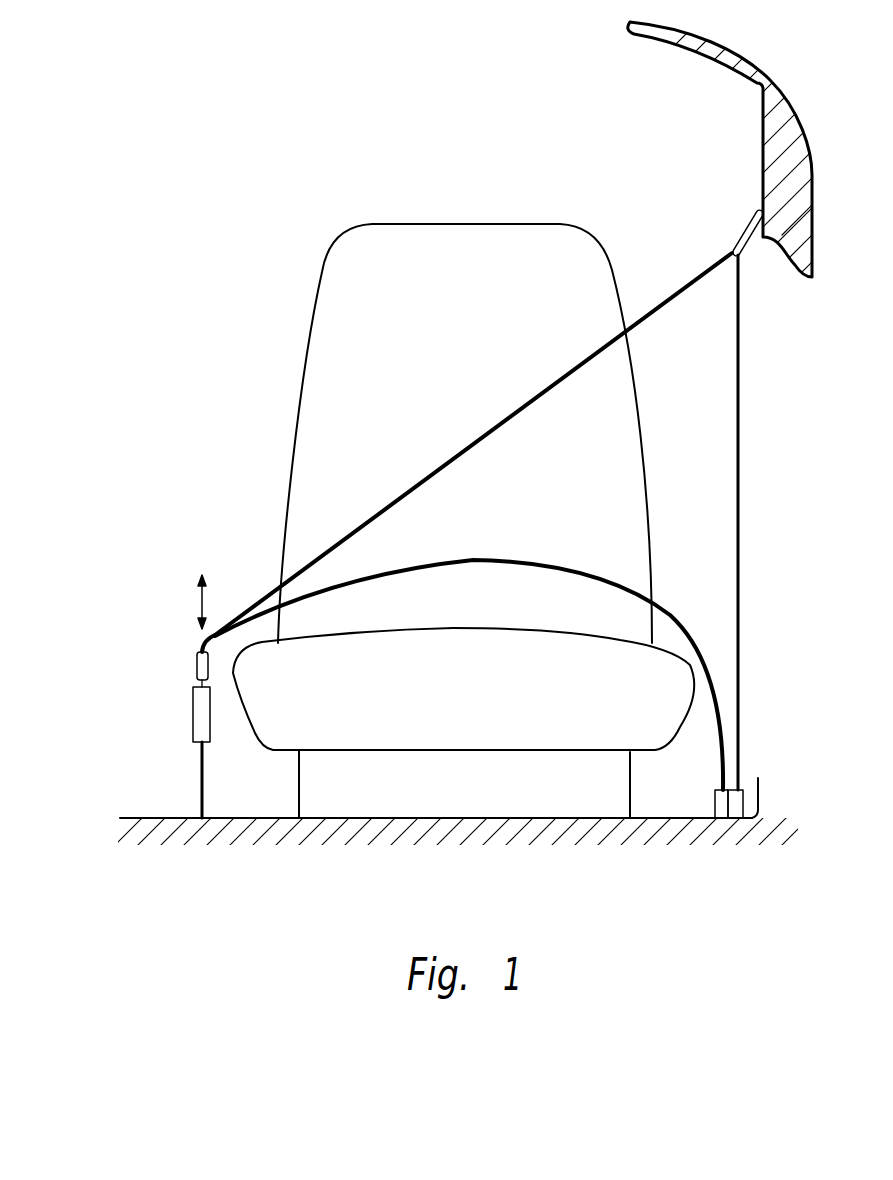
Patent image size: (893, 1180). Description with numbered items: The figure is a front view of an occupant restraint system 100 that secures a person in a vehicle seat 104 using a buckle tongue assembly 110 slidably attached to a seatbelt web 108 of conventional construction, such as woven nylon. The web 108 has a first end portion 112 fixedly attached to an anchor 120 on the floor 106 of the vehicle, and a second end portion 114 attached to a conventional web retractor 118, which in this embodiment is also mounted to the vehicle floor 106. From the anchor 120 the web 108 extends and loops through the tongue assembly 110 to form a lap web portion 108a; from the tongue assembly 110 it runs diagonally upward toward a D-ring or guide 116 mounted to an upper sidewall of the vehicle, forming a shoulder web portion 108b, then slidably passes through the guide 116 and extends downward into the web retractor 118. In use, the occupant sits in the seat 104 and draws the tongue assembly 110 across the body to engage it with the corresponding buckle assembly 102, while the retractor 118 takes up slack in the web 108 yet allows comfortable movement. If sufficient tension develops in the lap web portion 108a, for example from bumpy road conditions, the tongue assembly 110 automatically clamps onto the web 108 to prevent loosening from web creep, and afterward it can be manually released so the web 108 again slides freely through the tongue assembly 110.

The occupant restraint system 100 is at (348, 523).
The buckle assembly 102 is at (193, 703).
The vehicle seat 104 is at (388, 223).
The floor 106 is at (143, 817).
The web 108 is at (467, 521).
The lap web portion 108a is at (508, 556).
The shoulder web portion 108b is at (507, 423).
The buckle tongue assembly 110 is at (195, 665).
The first end portion 112 is at (720, 785).
The second end portion 114 is at (740, 782).
The D-ring or guide 116 is at (738, 240).
The web retractor 118 is at (760, 817).
The anchor 120 is at (713, 795).